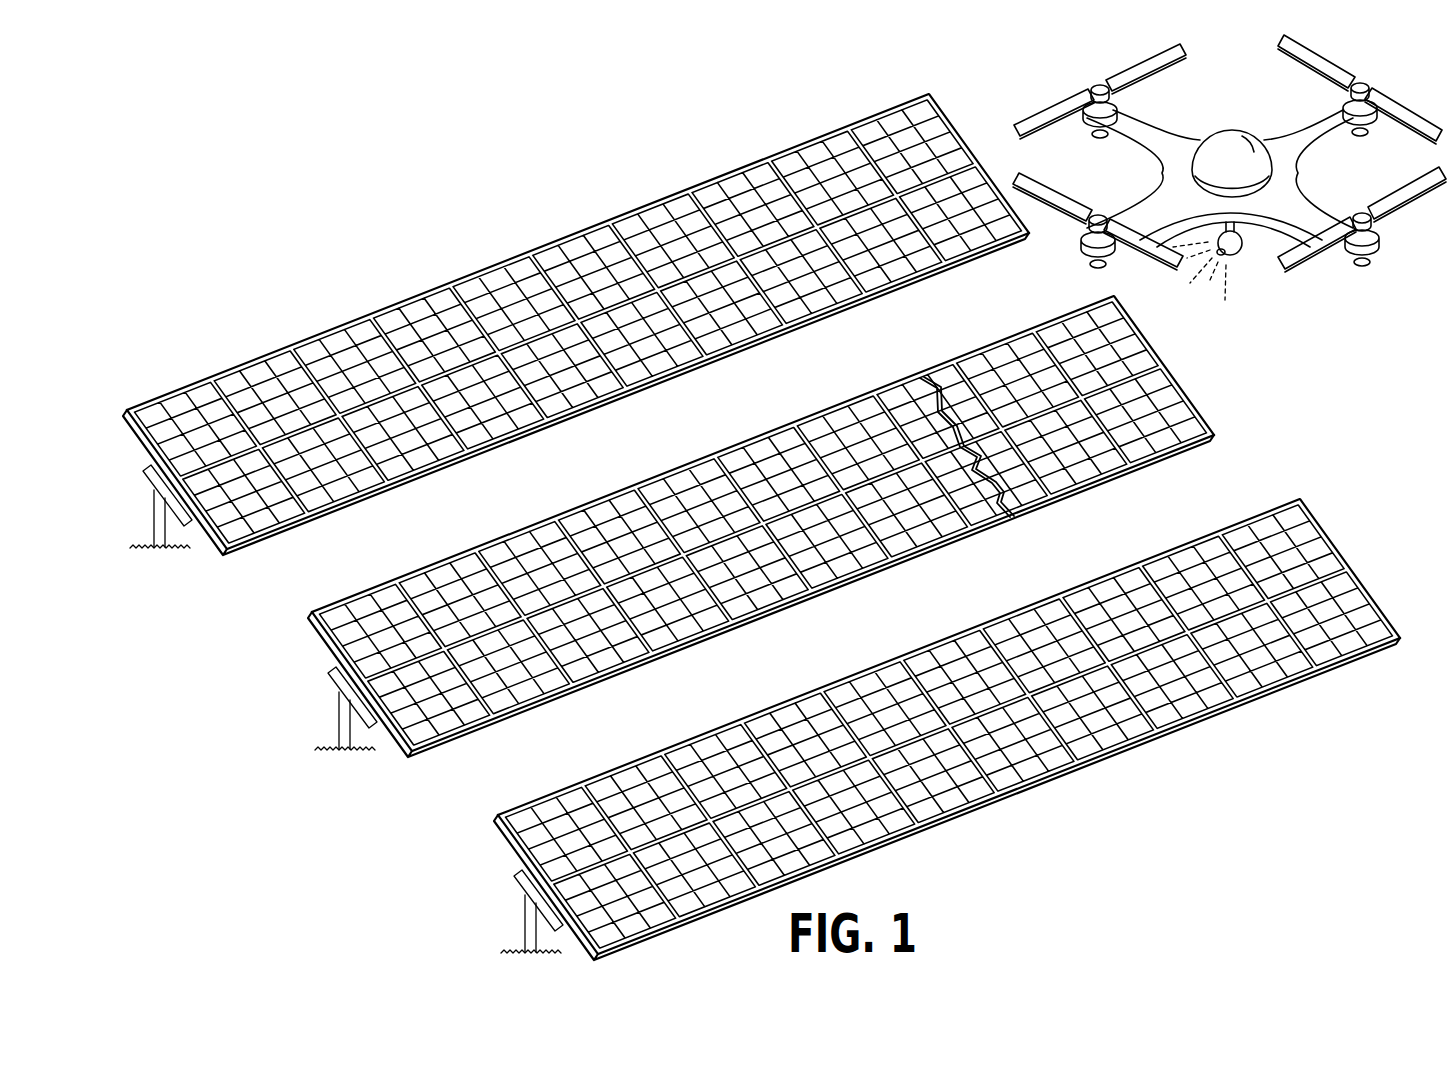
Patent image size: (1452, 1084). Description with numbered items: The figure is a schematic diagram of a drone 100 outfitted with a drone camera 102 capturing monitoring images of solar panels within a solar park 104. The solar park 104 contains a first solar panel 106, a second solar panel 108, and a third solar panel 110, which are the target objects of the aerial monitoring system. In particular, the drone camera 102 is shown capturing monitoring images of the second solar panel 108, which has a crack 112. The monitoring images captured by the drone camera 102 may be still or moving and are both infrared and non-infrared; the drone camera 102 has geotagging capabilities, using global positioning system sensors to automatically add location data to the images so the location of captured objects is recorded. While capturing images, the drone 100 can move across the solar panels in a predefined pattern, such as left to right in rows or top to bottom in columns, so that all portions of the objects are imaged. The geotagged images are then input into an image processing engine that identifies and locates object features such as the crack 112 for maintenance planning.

The drone 100 is at (1277, 135).
The drone camera 102 is at (1237, 258).
The solar park 104 is at (398, 190).
The first solar panel 106 is at (802, 147).
The second solar panel 108 is at (1190, 392).
The third solar panel 110 is at (1352, 568).
The crack 112 is at (1007, 500).